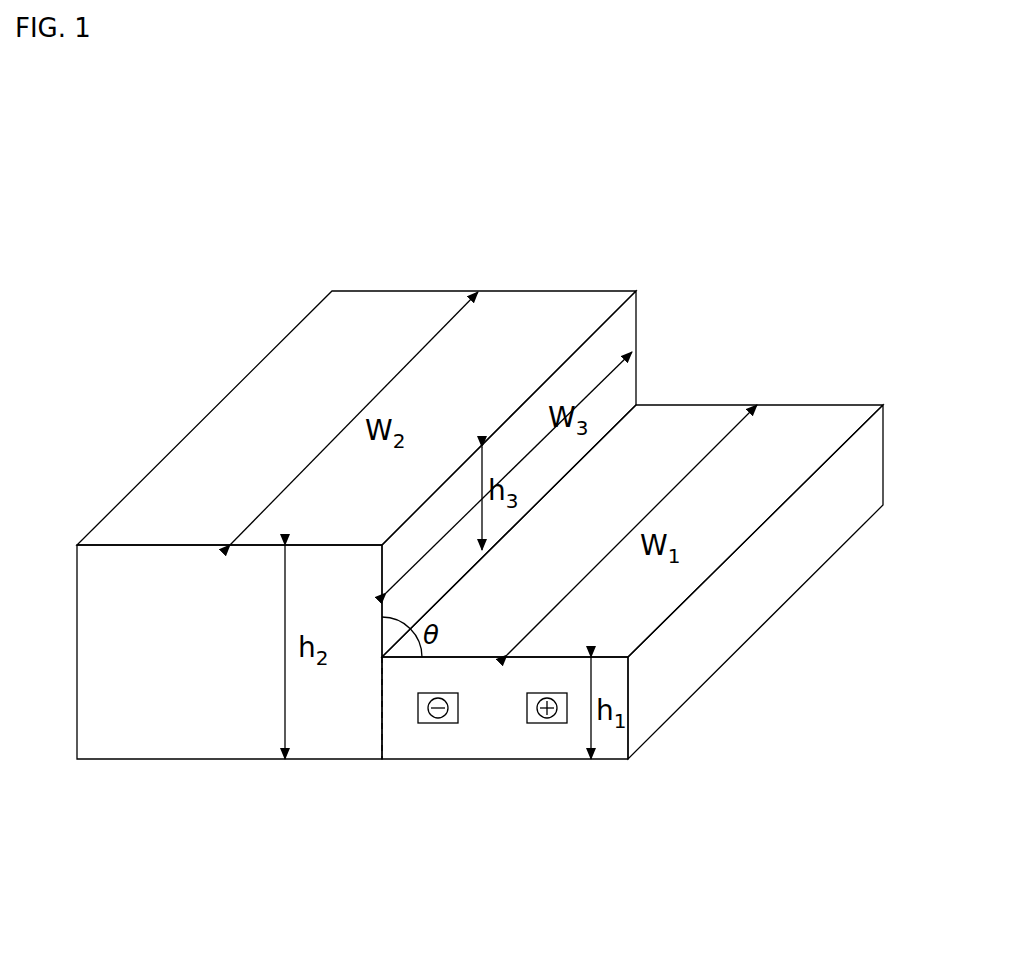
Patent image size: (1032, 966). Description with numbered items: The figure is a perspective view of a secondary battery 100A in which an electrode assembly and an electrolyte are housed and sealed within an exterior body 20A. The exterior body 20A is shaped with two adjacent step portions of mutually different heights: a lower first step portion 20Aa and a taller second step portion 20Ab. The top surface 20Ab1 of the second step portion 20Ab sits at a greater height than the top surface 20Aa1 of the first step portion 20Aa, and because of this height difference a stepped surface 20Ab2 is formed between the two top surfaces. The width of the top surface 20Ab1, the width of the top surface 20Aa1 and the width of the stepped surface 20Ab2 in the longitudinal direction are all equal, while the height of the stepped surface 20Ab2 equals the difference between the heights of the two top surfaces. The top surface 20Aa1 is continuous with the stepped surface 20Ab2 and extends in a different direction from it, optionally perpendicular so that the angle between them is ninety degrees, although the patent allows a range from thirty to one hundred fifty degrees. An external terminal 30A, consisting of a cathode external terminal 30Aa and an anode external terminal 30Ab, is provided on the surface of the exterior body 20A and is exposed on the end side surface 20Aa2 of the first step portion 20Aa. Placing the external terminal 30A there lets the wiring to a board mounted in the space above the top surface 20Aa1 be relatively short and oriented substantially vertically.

The secondary battery 100A is at (855, 330).
The exterior body 20A is at (727, 535).
The second step portion 20Ab is at (235, 733).
The top surface of the second step portion 20Ab1 is at (165, 525).
The stepped surface 20Ab2 is at (392, 633).
The first step portion 20Aa is at (527, 743).
The top surface of the first step portion 20Aa1 is at (617, 637).
The end side surface of the first step portion 20Aa2 is at (418, 735).
The external terminal 30A is at (663, 880).
The anode external terminal 30Ab is at (438, 723).
The cathode external terminal 30Aa is at (547, 723).